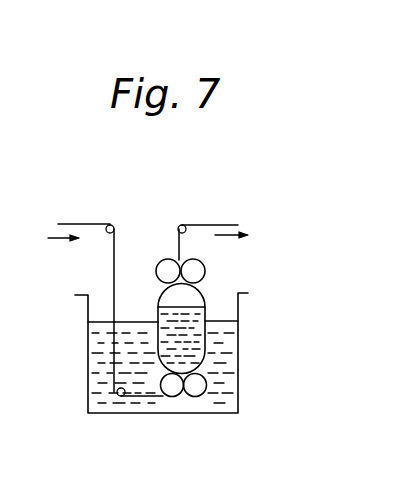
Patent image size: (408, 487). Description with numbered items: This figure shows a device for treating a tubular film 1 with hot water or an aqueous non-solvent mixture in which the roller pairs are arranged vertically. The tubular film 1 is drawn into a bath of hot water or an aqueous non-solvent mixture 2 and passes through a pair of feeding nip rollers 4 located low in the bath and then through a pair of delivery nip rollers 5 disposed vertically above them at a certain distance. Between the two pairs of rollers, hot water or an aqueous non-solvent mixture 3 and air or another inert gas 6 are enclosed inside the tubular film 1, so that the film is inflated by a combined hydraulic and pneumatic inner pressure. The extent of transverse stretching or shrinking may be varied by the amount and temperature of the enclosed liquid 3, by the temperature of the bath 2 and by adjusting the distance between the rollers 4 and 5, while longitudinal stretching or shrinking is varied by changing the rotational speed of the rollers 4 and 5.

The tubular film 1 is at (117, 242).
The bath of hot water or aqueous non-solvent mixture 2 is at (112, 402).
The hot water or aqueous non-solvent mixture 3 is at (198, 347).
The feeding nip rollers 4 is at (198, 392).
The delivery nip rollers 5 is at (201, 268).
The air or another inert gas 6 is at (193, 297).